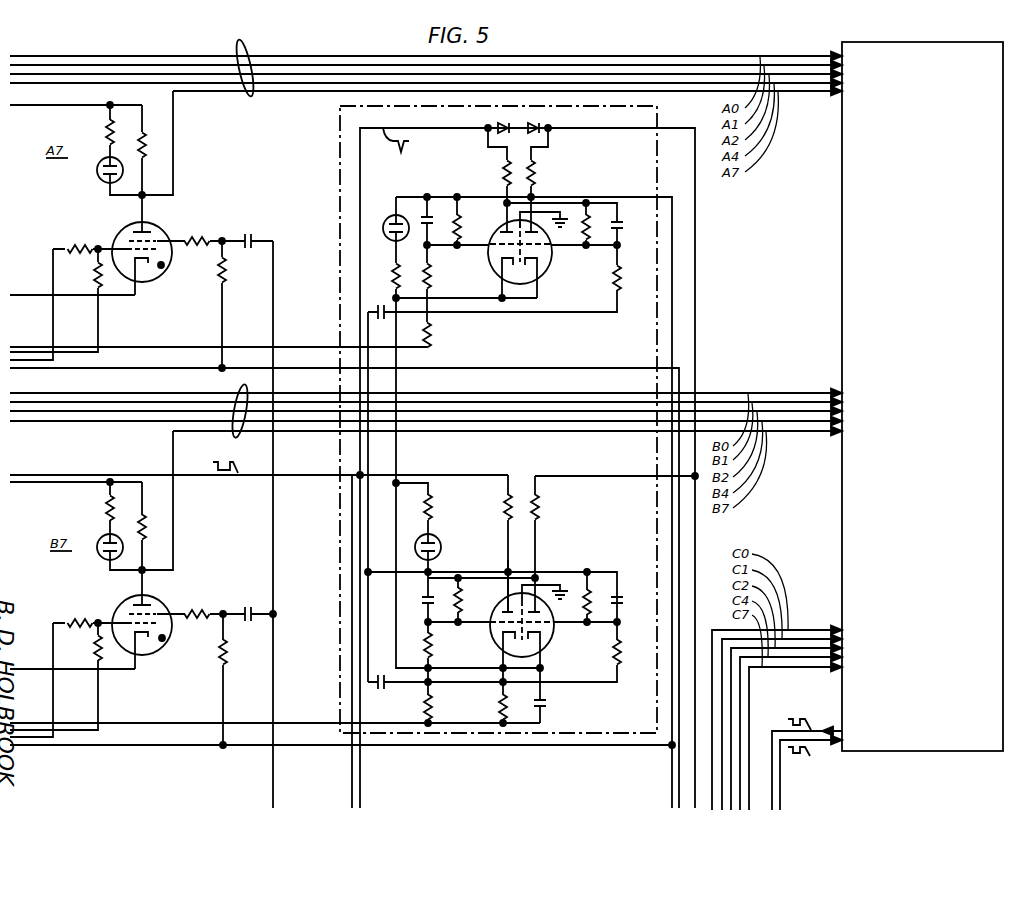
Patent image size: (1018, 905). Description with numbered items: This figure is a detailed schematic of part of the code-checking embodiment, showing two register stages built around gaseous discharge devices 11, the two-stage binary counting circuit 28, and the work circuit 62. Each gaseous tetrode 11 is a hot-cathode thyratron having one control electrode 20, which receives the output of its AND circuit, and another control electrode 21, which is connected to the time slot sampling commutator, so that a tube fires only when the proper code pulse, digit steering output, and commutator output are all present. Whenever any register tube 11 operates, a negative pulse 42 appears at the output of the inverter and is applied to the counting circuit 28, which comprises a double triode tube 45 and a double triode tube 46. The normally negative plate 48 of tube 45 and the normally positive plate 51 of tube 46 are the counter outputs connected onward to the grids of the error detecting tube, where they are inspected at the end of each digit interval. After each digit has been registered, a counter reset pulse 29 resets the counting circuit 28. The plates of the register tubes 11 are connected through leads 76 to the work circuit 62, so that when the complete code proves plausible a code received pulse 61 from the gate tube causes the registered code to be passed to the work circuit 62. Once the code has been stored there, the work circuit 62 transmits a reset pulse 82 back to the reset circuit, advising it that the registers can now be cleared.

The gaseous discharge device 11 is at (160, 225).
The control electrode 21 is at (122, 238).
The control electrode 20 is at (160, 250).
The leads 76 is at (249, 50).
The counting circuit 28 is at (706, 296).
The counter reset pulse 29 is at (411, 146).
The double triode tube 46 is at (561, 284).
The normally positive plate 51 is at (533, 231).
The double triode tube 45 is at (556, 633).
The normally negative plate 48 is at (503, 608).
The work circuit 62 is at (847, 226).
The negative pulse 42 is at (218, 462).
The reset pulse 82 is at (800, 718).
The code received pulse 61 is at (809, 757).